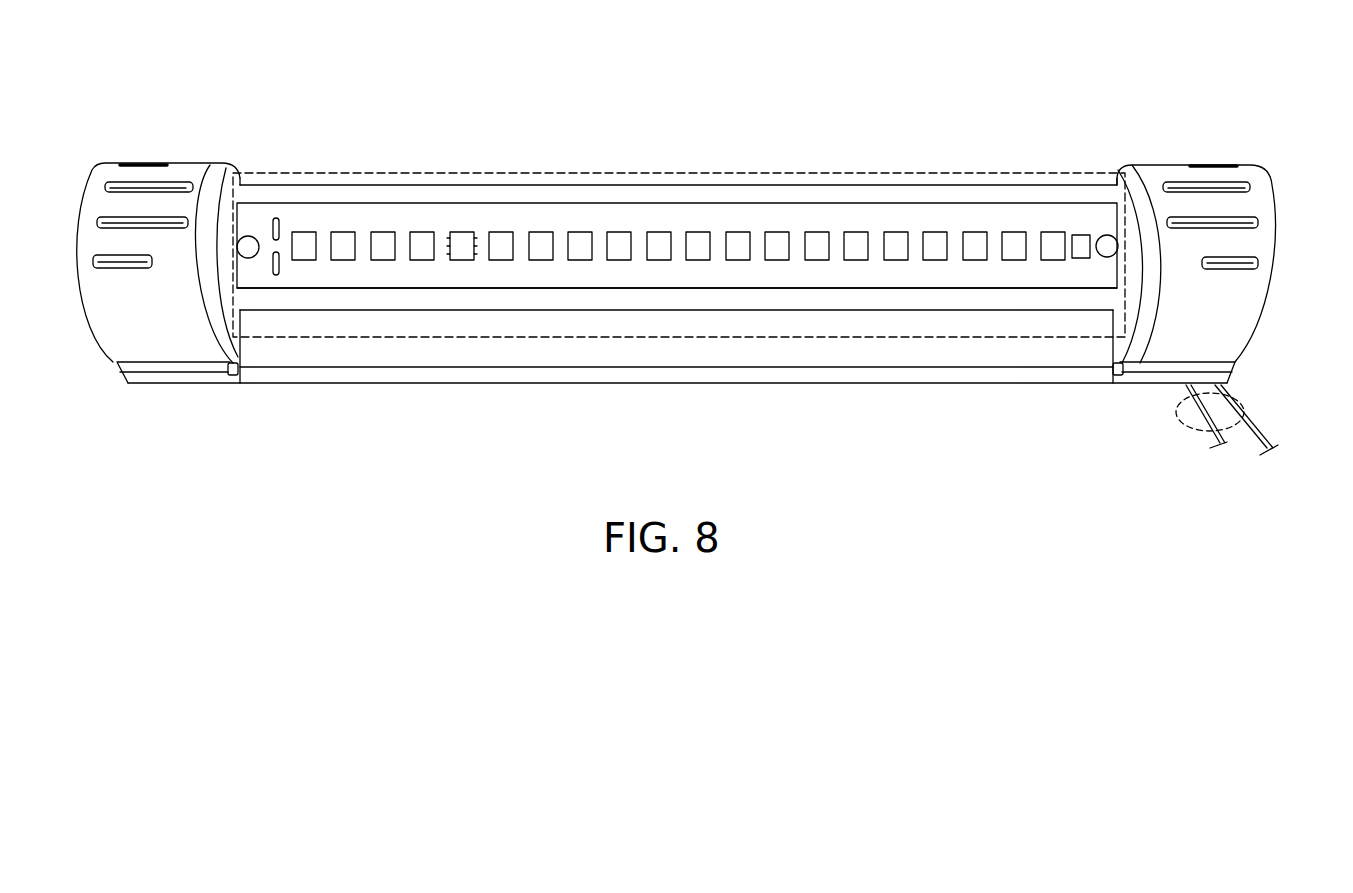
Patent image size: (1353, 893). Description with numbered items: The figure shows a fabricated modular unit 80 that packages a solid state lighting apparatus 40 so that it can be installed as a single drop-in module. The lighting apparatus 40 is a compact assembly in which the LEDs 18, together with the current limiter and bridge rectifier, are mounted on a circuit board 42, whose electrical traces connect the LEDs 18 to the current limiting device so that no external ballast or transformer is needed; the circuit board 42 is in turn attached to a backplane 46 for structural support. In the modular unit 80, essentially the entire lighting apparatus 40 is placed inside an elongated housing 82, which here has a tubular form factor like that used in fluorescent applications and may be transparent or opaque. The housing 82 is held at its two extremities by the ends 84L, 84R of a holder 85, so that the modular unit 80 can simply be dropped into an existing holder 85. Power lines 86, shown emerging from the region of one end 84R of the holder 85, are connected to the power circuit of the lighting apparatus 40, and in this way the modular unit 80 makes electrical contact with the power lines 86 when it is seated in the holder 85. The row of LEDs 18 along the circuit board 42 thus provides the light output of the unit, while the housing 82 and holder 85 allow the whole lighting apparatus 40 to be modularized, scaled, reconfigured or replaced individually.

The modular unit 80 is at (1181, 88).
The housing 82 is at (929, 220).
The LEDs 18 is at (459, 254).
The holder 85 is at (659, 376).
The lighting apparatus 40 is at (780, 345).
The circuit board 42 is at (853, 295).
The backplane 46 is at (928, 315).
The left end of holder 84L is at (178, 338).
The right end of holder 84R is at (1179, 313).
The power lines 86 is at (1257, 408).